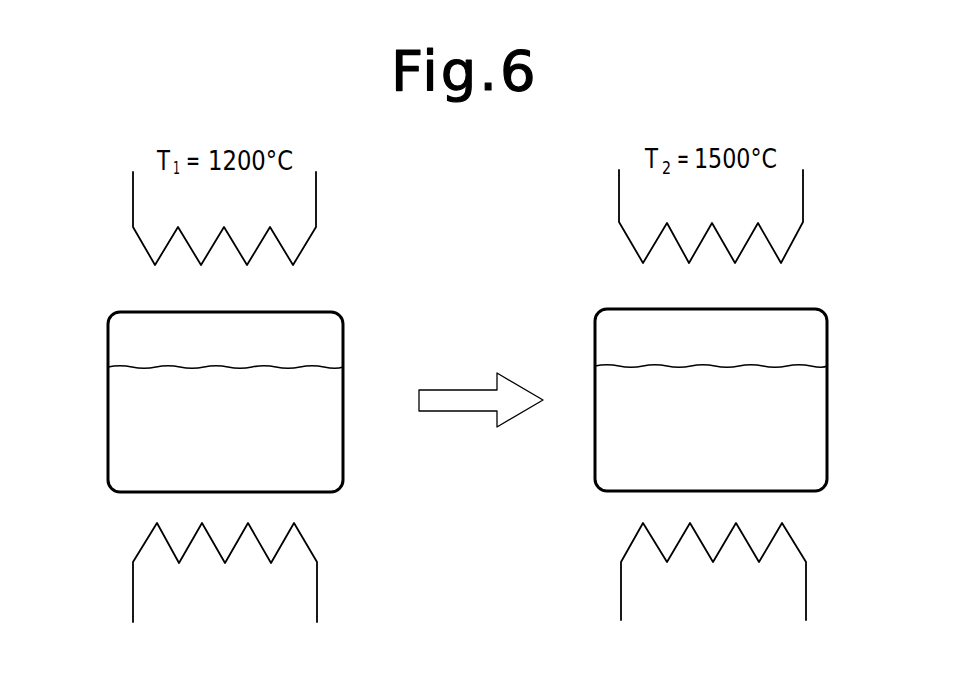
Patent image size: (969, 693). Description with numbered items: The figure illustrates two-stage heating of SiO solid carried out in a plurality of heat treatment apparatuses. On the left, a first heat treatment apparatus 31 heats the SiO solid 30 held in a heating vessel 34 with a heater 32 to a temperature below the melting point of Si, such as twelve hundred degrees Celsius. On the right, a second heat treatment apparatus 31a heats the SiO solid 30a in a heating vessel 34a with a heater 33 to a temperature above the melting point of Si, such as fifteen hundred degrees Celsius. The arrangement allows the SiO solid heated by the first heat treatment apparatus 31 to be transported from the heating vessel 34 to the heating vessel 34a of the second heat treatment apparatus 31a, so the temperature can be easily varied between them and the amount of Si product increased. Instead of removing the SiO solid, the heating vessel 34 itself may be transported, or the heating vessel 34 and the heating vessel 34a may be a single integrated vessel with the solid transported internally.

The SiO solid 30 is at (122, 433).
The SiO solid 30a is at (812, 435).
The first heat treatment apparatus 31 is at (99, 338).
The second heat treatment apparatus 31a is at (580, 324).
The heater 32 is at (317, 208).
The heater 33 is at (619, 193).
The heating vessel 34 is at (343, 331).
The heating vessel 34a is at (827, 322).